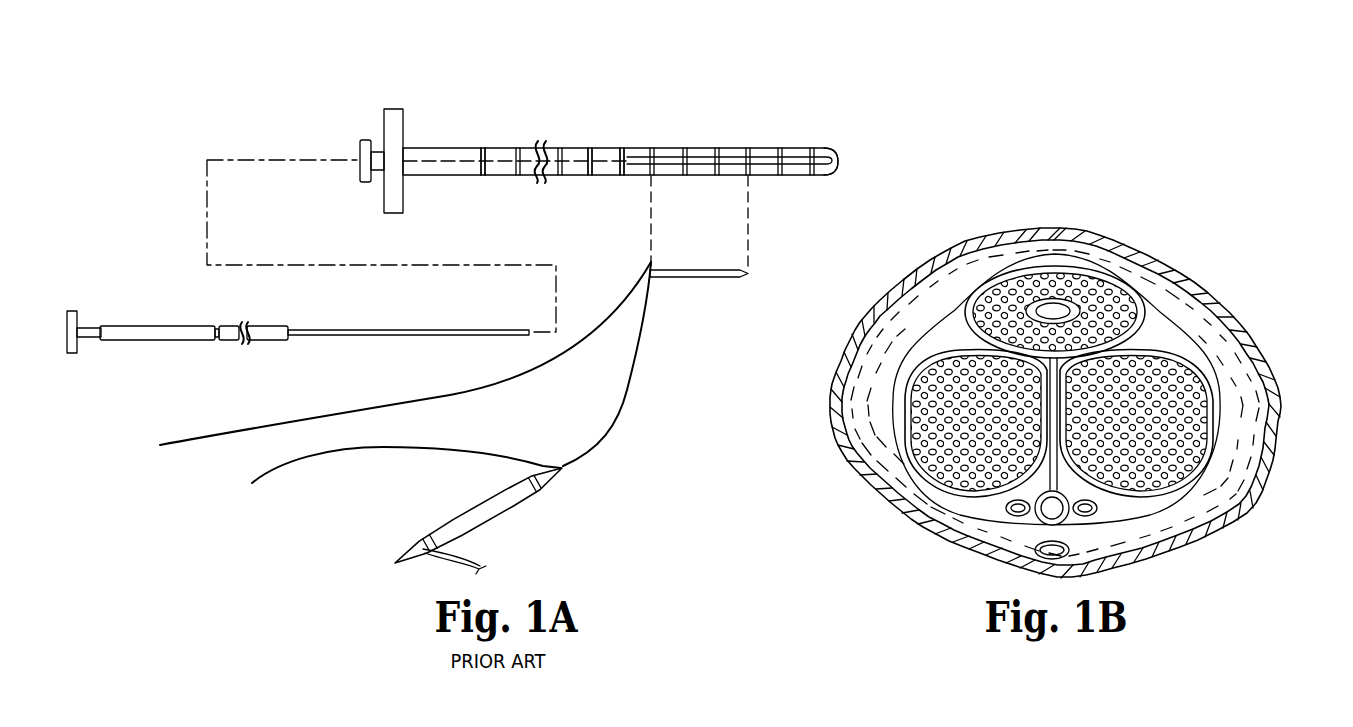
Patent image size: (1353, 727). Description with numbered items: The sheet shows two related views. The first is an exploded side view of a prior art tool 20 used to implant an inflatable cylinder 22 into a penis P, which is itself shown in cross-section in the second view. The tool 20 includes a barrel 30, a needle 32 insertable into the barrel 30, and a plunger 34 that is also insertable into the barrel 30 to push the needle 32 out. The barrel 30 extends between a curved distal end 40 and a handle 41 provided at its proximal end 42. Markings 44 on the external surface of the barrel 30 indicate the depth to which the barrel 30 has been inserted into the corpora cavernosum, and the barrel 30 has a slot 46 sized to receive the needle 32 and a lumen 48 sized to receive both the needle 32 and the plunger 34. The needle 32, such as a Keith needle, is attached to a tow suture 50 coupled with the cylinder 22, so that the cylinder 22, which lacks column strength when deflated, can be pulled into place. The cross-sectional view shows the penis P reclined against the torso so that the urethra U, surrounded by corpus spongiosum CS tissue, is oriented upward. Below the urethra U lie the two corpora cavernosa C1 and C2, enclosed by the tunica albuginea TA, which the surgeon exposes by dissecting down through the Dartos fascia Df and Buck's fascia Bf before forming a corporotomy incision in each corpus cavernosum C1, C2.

In FIG. 1A, the prior art tool 20 is at (180, 89).
In FIG. 1A, the inflatable cylinder 22 is at (516, 498).
In FIG. 1A, the barrel 30 is at (794, 148).
In FIG. 1A, the needle 32 is at (713, 278).
In FIG. 1A, the plunger 34 is at (147, 326).
In FIG. 1A, the curved distal end 40 is at (838, 166).
In FIG. 1A, the handle 41 is at (394, 110).
In FIG. 1A, the proximal end 42 is at (364, 140).
In FIG. 1A, the markings 44 is at (590, 158).
In FIG. 1A, the slot 46 is at (725, 160).
In FIG. 1A, the lumen 48 is at (495, 158).
In FIG. 1A, the tow suture 50 is at (437, 395).
In FIG. 1B, the urethra U is at (1048, 308).
In FIG. 1B, the penis P is at (1178, 242).
In FIG. 1B, the corpus spongiosum CS is at (1108, 308).
In FIG. 1B, the first corpus cavernosum C1 is at (932, 383).
In FIG. 1B, the second corpus cavernosum C2 is at (1160, 388).
In FIG. 1B, the tunica albuginea TA is at (897, 378).
In FIG. 1B, the Buck's fascia Bf is at (900, 462).
In FIG. 1B, the Dartos fascia Df is at (890, 494).